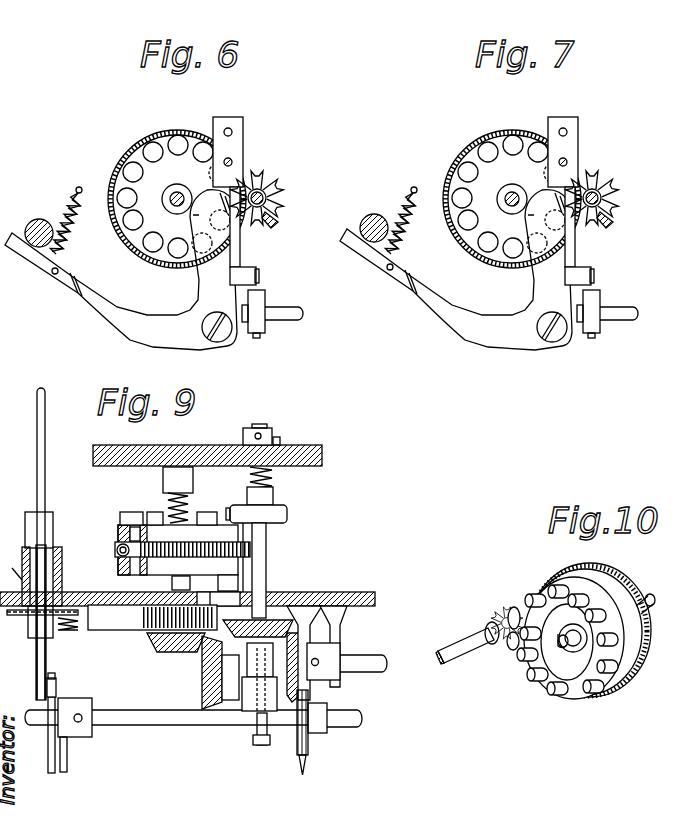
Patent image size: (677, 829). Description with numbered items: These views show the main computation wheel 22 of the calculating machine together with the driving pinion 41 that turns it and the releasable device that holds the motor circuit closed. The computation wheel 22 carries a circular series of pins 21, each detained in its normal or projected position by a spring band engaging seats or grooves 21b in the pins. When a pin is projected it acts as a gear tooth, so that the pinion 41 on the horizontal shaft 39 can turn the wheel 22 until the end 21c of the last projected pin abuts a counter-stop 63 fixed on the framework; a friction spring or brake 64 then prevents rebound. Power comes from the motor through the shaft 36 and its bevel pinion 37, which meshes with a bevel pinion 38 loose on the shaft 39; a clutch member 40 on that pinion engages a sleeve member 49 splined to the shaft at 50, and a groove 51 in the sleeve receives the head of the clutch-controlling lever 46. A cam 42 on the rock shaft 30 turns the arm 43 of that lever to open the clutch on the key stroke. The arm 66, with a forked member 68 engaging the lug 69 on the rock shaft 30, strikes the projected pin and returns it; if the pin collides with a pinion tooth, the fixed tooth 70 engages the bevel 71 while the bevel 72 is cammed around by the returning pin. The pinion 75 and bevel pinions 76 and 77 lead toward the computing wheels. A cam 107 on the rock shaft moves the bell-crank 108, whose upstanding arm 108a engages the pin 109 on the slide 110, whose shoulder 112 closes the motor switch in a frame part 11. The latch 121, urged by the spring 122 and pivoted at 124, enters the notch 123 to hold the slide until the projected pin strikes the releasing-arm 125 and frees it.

In FIG. 9, the frame bracket 11 is at (11, 571).
In FIG. 6, the pins 21 is at (175, 152).
In FIG. 7, the pins 21 is at (500, 160).
In FIG. 9, the pins 21 is at (153, 516).
In FIG. 10, the pins 21 is at (548, 686).
In FIG. 9, the seats or grooves 21b is at (128, 531).
In FIG. 6, the end of the last projected pin 21c is at (218, 182).
In FIG. 7, the end of the last projected pin 21c is at (539, 173).
In FIG. 9, the end of the last projected pin 21c is at (238, 585).
In FIG. 10, the end of the last projected pin 21c is at (634, 686).
In FIG. 6, the computation wheel 22 is at (131, 151).
In FIG. 7, the computation wheel 22 is at (510, 198).
In FIG. 9, the computation wheel 22 is at (121, 556).
In FIG. 10, the computation wheel 22 is at (583, 698).
In FIG. 6, the rock shaft 30 is at (294, 312).
In FIG. 7, the rock shaft 30 is at (619, 324).
In FIG. 9, the rock shaft 30 is at (353, 714).
In FIG. 9, the shaft 36 is at (361, 660).
In FIG. 9, the bevel pinion 37 is at (306, 652).
In FIG. 9, the bevel pinion 38 is at (304, 653).
In FIG. 9, the horizontal shaft 39 is at (266, 556).
In FIG. 10, the horizontal shaft 39 is at (468, 651).
In FIG. 9, the clutch member 40 is at (260, 660).
In FIG. 6, the pinion 41 is at (266, 176).
In FIG. 7, the pinion 41 is at (592, 188).
In FIG. 9, the pinion 41 is at (248, 508).
In FIG. 10, the pinion 41 is at (492, 621).
In FIG. 9, the cam 42 is at (308, 742).
In FIG. 9, the arm 43 is at (302, 772).
In FIG. 9, the clutch-controlling lever 46 is at (288, 671).
In FIG. 9, the clutch member 49 is at (252, 637).
In FIG. 9, the spline 50 is at (255, 742).
In FIG. 9, the groove 51 is at (206, 654).
In FIG. 6, the counter-stop 63 is at (225, 120).
In FIG. 7, the counter-stop 63 is at (562, 143).
In FIG. 9, the friction spring or brake 64 is at (190, 507).
In FIG. 6, the arm 66 is at (240, 240).
In FIG. 7, the arm 66 is at (580, 227).
In FIG. 9, the arm 66 is at (228, 582).
In FIG. 6, the forked member 68 is at (260, 279).
In FIG. 7, the forked member 68 is at (592, 276).
In FIG. 6, the arm or lug 69 is at (263, 318).
In FIG. 7, the arm or lug 69 is at (600, 312).
In FIG. 9, the arm or lug 69 is at (252, 690).
In FIG. 6, the spur or tooth 70 is at (273, 224).
In FIG. 7, the spur or tooth 70 is at (609, 231).
In FIG. 9, the spur or tooth 70 is at (276, 477).
In FIG. 9, the beveled side of pinion tooth 71 is at (275, 497).
In FIG. 10, the beveled side of pinion tooth 71 is at (509, 651).
In FIG. 6, the beveled side of pinion tooth 72 is at (280, 192).
In FIG. 7, the beveled side of pinion tooth 72 is at (592, 198).
In FIG. 9, the beveled side of pinion tooth 72 is at (264, 518).
In FIG. 10, the beveled side of pinion tooth 72 is at (512, 606).
In FIG. 9, the pinion 75 is at (146, 618).
In FIG. 9, the bevel pinion 76 is at (157, 646).
In FIG. 9, the bevel pinion 77 is at (210, 708).
In FIG. 9, the cam 107 is at (68, 733).
In FIG. 9, the bell-crank 108 is at (52, 768).
In FIG. 9, the upstanding arm 108a is at (56, 680).
In FIG. 9, the pin 109 is at (62, 690).
In FIG. 6, the bar or slide 110 is at (39, 222).
In FIG. 7, the bar or slide 110 is at (374, 228).
In FIG. 9, the bar or slide 110 is at (42, 652).
In FIG. 9, the shoulder 112 is at (42, 544).
In FIG. 6, the latch 121 is at (96, 301).
In FIG. 7, the latch 121 is at (456, 270).
In FIG. 6, the spring 122 is at (74, 226).
In FIG. 7, the spring 122 is at (401, 220).
In FIG. 6, the notch 123 is at (34, 242).
In FIG. 7, the notch 123 is at (368, 264).
In FIG. 6, the pivot 124 is at (220, 340).
In FIG. 7, the pivot 124 is at (548, 341).
In FIG. 6, the releasing-arm 125 is at (202, 270).
In FIG. 7, the releasing-arm 125 is at (532, 242).